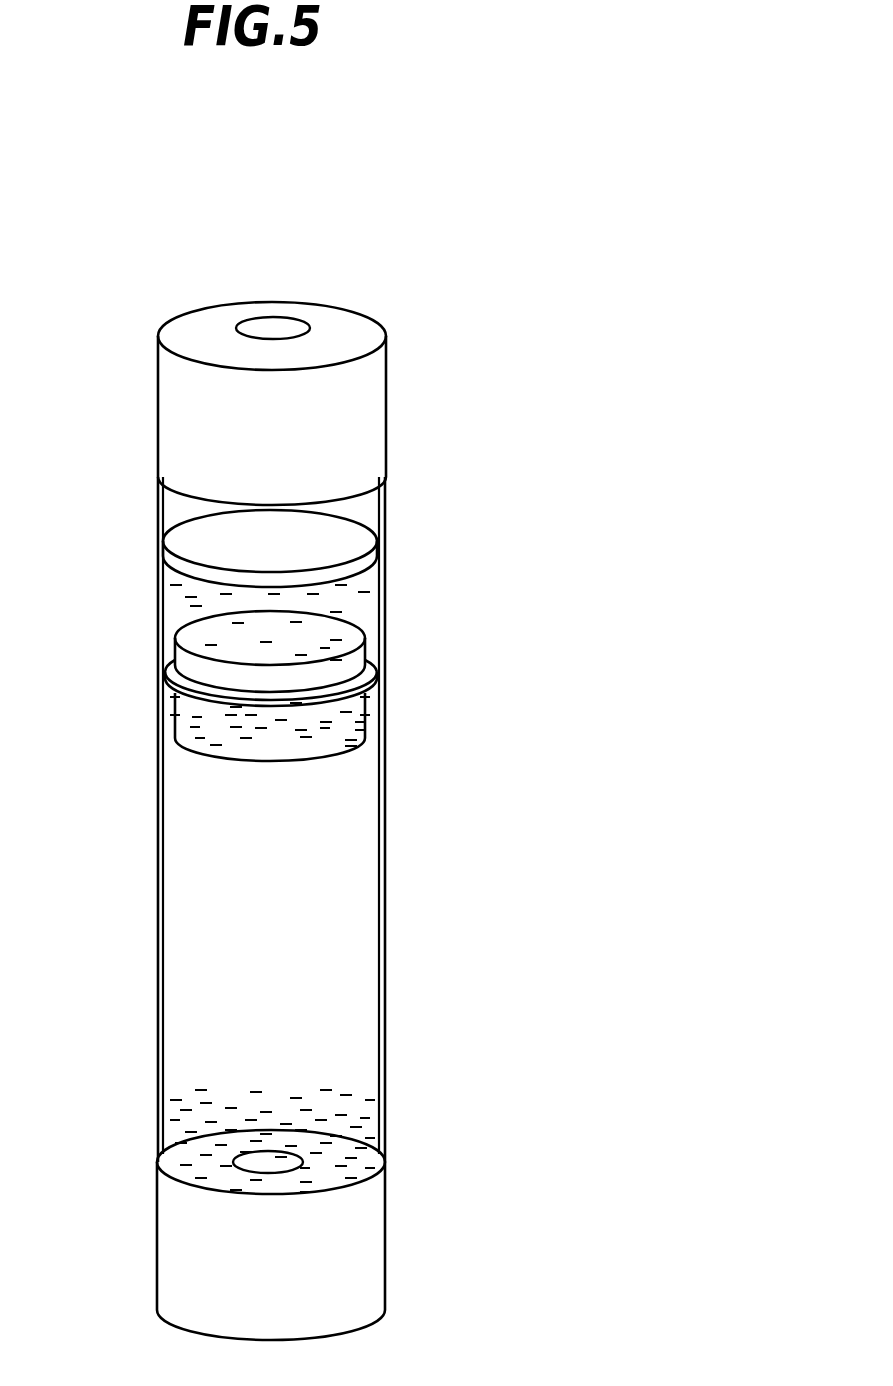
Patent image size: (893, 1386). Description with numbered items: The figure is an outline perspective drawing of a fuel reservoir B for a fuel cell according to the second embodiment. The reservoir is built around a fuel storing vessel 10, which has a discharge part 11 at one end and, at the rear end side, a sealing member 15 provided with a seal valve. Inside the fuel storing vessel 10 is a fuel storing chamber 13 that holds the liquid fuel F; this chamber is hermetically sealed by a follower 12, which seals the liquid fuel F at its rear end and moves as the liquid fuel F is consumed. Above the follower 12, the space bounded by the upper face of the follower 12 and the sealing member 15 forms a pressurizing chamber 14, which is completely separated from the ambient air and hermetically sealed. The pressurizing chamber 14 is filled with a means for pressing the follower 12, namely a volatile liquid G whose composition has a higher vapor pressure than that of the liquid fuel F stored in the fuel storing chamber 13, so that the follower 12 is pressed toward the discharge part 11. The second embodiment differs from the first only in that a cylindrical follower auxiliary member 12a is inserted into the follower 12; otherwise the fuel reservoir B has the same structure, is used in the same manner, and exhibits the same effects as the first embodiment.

The fuel storing vessel 10 is at (392, 855).
The discharge part 11 is at (168, 1240).
The follower 12 is at (352, 667).
The follower auxiliary member 12a is at (283, 690).
The fuel storing chamber 13 is at (383, 927).
The pressurizing chamber 14 is at (355, 510).
The sealing member 15 is at (365, 400).
The fuel reservoir B is at (400, 288).
The liquid fuel F is at (335, 997).
The volatile liquid G is at (190, 548).